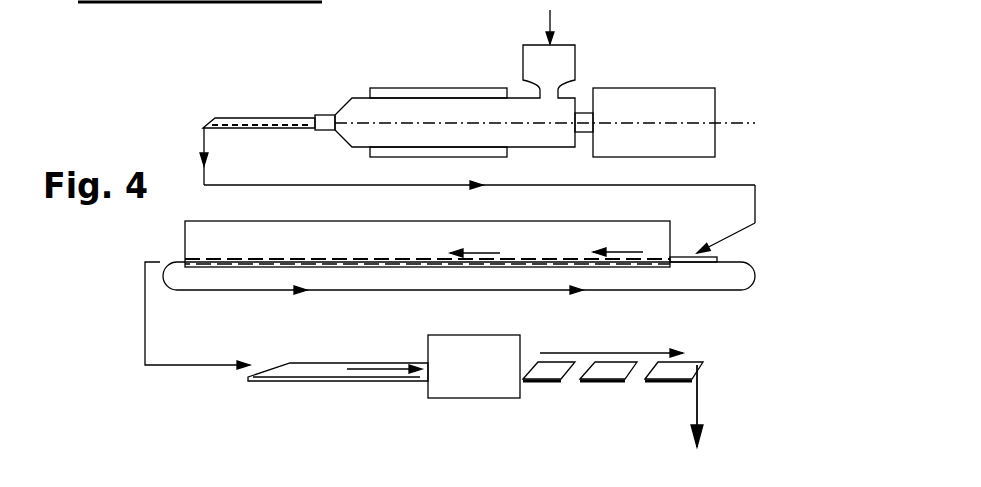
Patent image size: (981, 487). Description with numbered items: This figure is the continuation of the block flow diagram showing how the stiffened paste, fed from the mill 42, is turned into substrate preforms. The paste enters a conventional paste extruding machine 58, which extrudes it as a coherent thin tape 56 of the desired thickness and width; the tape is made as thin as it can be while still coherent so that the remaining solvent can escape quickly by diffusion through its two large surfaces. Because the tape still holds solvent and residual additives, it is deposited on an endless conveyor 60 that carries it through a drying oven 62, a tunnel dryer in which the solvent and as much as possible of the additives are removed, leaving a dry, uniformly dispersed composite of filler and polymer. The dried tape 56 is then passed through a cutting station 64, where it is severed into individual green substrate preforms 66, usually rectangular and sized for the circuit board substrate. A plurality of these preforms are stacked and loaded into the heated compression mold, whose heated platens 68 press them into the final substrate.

The mill 42 is at (646, 23).
The tape 56 is at (212, 118).
The paste extruding machine 58 is at (352, 103).
The endless conveyor 60 is at (660, 291).
The drying oven 62 is at (360, 240).
The cutting station 64 is at (459, 388).
The substrate preforms 66 is at (600, 382).
The upper platen 68 is at (649, 422).